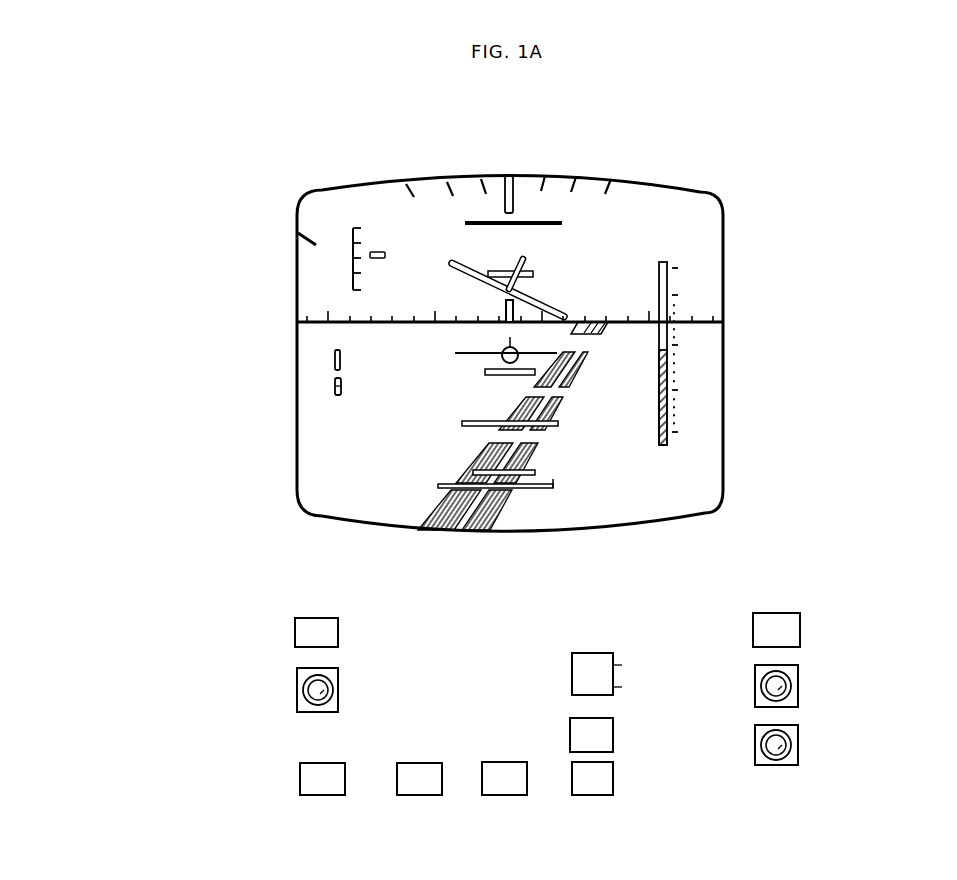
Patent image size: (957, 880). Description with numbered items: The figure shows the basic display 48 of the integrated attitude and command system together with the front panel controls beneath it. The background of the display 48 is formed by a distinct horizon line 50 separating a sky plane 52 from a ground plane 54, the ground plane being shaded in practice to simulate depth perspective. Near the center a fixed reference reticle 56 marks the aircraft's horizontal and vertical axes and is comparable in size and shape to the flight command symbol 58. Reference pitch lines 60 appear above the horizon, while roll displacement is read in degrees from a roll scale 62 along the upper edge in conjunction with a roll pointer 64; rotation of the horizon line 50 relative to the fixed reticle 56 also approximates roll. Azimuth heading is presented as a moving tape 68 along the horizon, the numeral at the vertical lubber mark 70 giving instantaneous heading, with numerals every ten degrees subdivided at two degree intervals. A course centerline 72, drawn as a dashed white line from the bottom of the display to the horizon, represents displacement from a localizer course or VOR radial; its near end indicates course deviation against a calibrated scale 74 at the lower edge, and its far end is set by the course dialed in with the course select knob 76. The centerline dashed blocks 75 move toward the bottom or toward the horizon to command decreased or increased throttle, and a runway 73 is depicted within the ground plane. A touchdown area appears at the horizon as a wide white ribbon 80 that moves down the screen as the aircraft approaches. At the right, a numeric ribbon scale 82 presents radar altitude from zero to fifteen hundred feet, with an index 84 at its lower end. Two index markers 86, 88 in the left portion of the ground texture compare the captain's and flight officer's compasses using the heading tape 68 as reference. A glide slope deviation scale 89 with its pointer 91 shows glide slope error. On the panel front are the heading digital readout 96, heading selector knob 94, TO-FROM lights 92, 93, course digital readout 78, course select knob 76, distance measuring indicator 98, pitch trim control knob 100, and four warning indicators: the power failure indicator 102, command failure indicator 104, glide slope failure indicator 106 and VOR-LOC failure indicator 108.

The basic display 48 is at (707, 244).
The horizon line 50 is at (312, 326).
The sky plane 52 is at (733, 301).
The ground plane 54 is at (710, 411).
The fixed reference reticle 56 is at (460, 355).
The flight command symbol 58 is at (527, 290).
The reference pitch lines 60 is at (563, 222).
The roll scale 62 is at (480, 187).
The roll pointer 64 is at (515, 197).
The moving tape 68 is at (305, 302).
The vertical lubber mark 70 is at (503, 303).
The course centerline 72 is at (568, 390).
The runway 73 is at (572, 390).
The calibrated scale 74 is at (442, 485).
The centerline dashed blocks 75 is at (477, 455).
The course select knob 76 is at (798, 686).
The course digital readout 78 is at (800, 633).
The touchdown area ribbon 80 is at (601, 335).
The numeric ribbon scale 82 is at (700, 344).
The radar altitude index 84 is at (666, 448).
The index marker 86 is at (336, 371).
The index marker 88 is at (334, 396).
The glide slope deviation scale 89 is at (350, 270).
The pointer 91 is at (380, 268).
The TO-FROM light 92 is at (572, 666).
The TO-FROM light 93 is at (572, 688).
The heading selector knob 94 is at (300, 693).
The heading digital readout 96 is at (300, 636).
The distance measuring indicator 98 is at (613, 742).
The pitch trim control knob 100 is at (798, 742).
The power failure indicator 102 is at (292, 803).
The command failure indicator 104 is at (389, 803).
The glide slope failure indicator 106 is at (483, 788).
The VOR-LOC failure indicator 108 is at (613, 779).